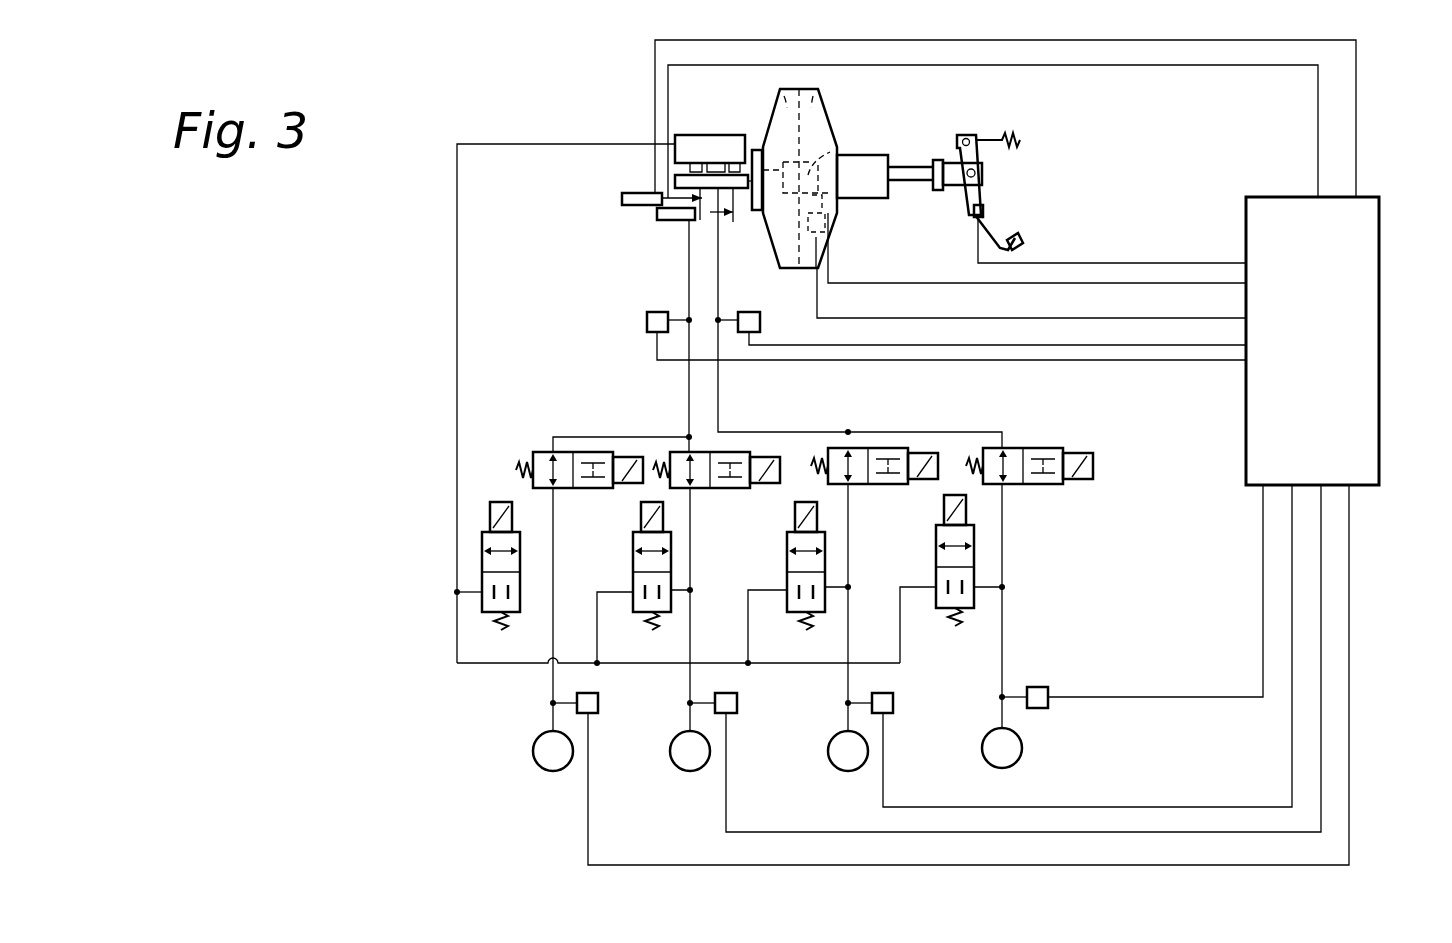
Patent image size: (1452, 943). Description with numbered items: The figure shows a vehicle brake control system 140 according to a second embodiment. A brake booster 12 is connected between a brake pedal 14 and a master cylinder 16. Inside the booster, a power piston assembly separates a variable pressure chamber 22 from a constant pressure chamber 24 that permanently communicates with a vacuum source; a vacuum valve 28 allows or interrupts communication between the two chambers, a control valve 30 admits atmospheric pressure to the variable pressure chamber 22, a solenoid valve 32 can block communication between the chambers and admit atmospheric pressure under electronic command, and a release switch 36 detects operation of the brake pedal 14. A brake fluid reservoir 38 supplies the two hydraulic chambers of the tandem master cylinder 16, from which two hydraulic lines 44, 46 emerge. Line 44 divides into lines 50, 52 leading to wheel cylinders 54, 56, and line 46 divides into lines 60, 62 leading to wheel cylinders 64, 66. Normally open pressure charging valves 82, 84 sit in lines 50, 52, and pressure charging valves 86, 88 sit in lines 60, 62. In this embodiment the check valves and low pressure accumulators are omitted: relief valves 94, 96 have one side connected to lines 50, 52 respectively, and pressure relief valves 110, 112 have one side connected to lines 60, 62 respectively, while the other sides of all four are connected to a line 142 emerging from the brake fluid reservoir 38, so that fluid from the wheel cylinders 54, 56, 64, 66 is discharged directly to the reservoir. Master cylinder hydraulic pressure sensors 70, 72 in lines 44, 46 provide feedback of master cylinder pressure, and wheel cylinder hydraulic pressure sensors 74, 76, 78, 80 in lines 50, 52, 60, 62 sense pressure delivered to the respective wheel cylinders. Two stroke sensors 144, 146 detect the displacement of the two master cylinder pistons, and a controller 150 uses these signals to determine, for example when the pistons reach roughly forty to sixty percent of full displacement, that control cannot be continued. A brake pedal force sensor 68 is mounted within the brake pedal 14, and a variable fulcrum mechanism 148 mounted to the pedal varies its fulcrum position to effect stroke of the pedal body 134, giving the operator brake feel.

The brake booster 12 is at (838, 133).
The brake pedal 14 is at (988, 195).
The master cylinder 16 is at (675, 181).
The variable pressure chamber 22 is at (813, 96).
The constant pressure chamber 24 is at (787, 96).
The vacuum valve 28 is at (830, 152).
The control valve 30 is at (833, 205).
The solenoid valve 32 is at (828, 240).
The release switch 36 is at (828, 222).
The brake fluid reservoir 38 is at (676, 140).
The hydraulic line 44 is at (689, 380).
The hydraulic line 46 is at (720, 395).
The hydraulic line 50 is at (556, 500).
The hydraulic line 52 is at (692, 518).
The wheel cylinder 54 is at (553, 772).
The wheel cylinder 56 is at (690, 772).
The hydraulic line 60 is at (850, 506).
The hydraulic line 62 is at (1004, 534).
The wheel cylinder 64 is at (848, 772).
The wheel cylinder 66 is at (1002, 769).
The brake pedal force sensor 68 is at (986, 213).
The master cylinder hydraulic pressure sensor 70 is at (648, 316).
The master cylinder hydraulic pressure sensor 72 is at (760, 320).
The wheel cylinder hydraulic pressure sensor 74 is at (592, 715).
The wheel cylinder hydraulic pressure sensor 76 is at (727, 715).
The wheel cylinder hydraulic pressure sensor 78 is at (883, 715).
The wheel cylinder hydraulic pressure sensor 80 is at (1040, 710).
The pressure charging valve 82 is at (548, 450).
The pressure charging valve 84 is at (682, 450).
The pressure charging valve 86 is at (868, 446).
The pressure charging valve 88 is at (1068, 447).
The relief valve 94 is at (482, 550).
The relief valve 96 is at (633, 552).
The pressure relief valve 110 is at (787, 551).
The pressure relief valve 112 is at (938, 545).
The pedal body 134 is at (1030, 243).
The vehicle brake control system 140 is at (1172, 172).
The line 142 is at (510, 665).
The stroke sensor 144 is at (628, 207).
The stroke sensor 146 is at (678, 223).
The variable fulcrum mechanism 148 is at (1022, 138).
The controller 150 is at (1379, 196).